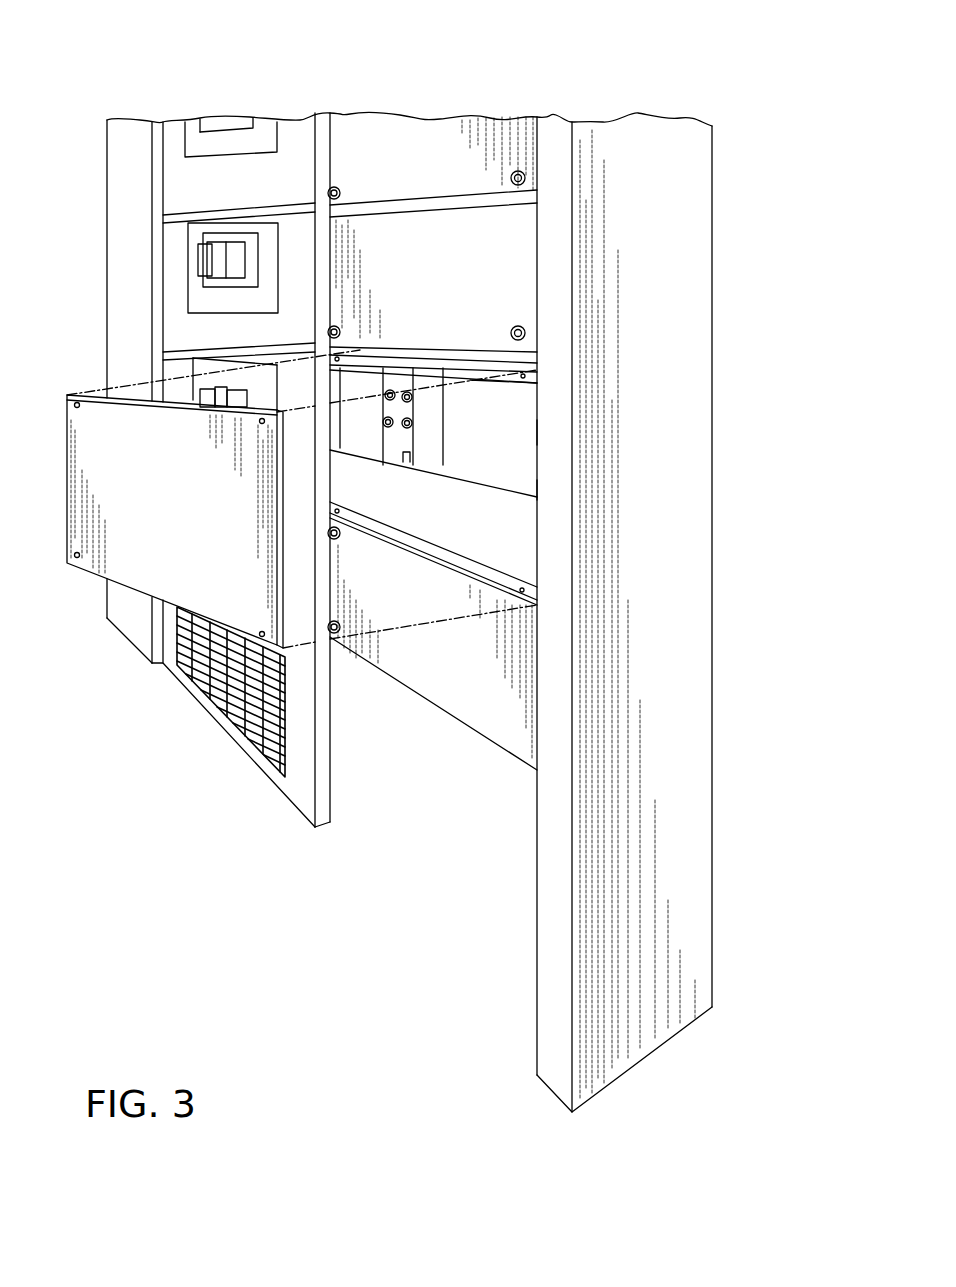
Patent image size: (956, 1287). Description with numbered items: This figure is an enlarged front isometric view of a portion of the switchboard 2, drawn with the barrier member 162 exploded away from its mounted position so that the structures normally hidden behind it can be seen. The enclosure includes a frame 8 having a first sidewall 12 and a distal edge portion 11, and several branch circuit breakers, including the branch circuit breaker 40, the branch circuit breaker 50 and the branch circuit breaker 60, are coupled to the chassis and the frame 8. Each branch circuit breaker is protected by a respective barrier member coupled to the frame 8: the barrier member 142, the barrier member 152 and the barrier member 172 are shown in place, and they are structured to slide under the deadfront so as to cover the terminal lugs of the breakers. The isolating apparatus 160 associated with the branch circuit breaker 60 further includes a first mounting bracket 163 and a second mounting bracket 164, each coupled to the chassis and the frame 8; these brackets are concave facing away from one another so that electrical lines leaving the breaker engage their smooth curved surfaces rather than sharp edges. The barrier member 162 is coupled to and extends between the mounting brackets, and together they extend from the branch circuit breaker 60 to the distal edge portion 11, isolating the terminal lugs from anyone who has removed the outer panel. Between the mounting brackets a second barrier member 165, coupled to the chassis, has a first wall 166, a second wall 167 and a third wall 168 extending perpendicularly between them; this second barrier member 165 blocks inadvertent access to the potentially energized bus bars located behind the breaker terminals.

The switchboard 2 is at (185, 745).
The frame 8 is at (558, 492).
The distal edge portion 11 is at (535, 422).
The first sidewall 12 is at (695, 690).
The branch circuit breaker 40 is at (196, 128).
The branch circuit breaker 50 is at (198, 266).
The branch circuit breaker 60 is at (200, 395).
The barrier member 142 is at (430, 155).
The barrier member 152 is at (517, 273).
The isolating apparatus 160 is at (523, 510).
The barrier member 162 is at (157, 572).
The first mounting bracket 163 is at (503, 380).
The second mounting bracket 164 is at (447, 557).
The second barrier member 165 is at (353, 430).
The first wall 166 is at (407, 385).
The second wall 167 is at (343, 387).
The third wall 168 is at (372, 387).
The barrier member 172 is at (453, 687).